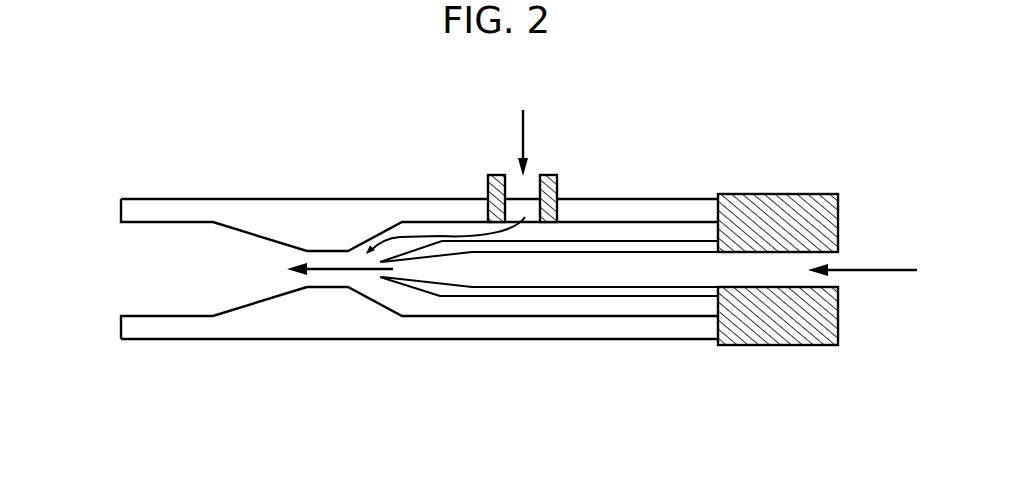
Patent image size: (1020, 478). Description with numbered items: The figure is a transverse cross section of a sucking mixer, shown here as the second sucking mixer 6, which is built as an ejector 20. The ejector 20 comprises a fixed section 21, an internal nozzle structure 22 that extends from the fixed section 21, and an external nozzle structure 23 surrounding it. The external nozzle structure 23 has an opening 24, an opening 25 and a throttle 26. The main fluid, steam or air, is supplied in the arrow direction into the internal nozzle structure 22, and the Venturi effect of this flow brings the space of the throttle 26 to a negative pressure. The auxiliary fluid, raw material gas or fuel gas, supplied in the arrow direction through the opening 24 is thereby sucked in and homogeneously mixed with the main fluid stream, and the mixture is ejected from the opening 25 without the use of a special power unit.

The second sucking mixer 6 is at (242, 150).
The ejector 20 is at (333, 199).
The fixed section 21 is at (733, 345).
The internal nozzle structure 22 is at (523, 297).
The external nozzle structure 23 is at (167, 315).
The opening 24 is at (532, 182).
The opening 25 is at (130, 274).
The throttle 26 is at (330, 287).